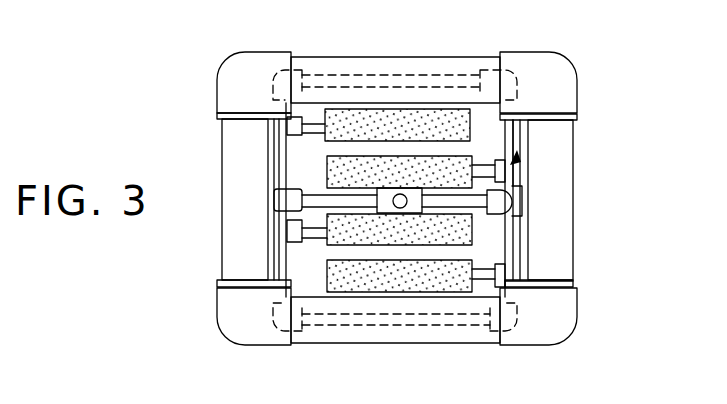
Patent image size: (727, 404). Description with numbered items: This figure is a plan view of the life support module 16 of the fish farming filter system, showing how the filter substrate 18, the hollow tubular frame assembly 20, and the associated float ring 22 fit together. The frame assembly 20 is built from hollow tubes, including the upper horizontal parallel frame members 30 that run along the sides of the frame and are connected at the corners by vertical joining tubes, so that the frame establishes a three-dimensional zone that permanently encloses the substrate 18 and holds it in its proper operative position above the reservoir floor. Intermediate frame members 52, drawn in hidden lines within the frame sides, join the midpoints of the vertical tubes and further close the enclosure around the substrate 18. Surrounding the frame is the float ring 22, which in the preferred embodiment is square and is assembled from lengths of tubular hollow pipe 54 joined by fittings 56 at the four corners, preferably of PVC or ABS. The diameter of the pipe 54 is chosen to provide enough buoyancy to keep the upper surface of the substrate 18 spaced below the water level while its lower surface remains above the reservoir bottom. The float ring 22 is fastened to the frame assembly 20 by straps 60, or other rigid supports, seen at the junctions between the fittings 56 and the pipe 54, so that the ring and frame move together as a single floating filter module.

The life support module 16 is at (579, 58).
The substrate 18 is at (527, 279).
The hollow tubular frame assembly 20 is at (518, 158).
The float ring 22 is at (500, 4).
The upper horizontal parallel frame members 30 is at (278, 152).
The intermediate frame members 52 is at (480, 73).
The tubular hollow pipe 54 is at (323, 62).
The fittings 56 is at (240, 66).
The straps 60 is at (217, 116).